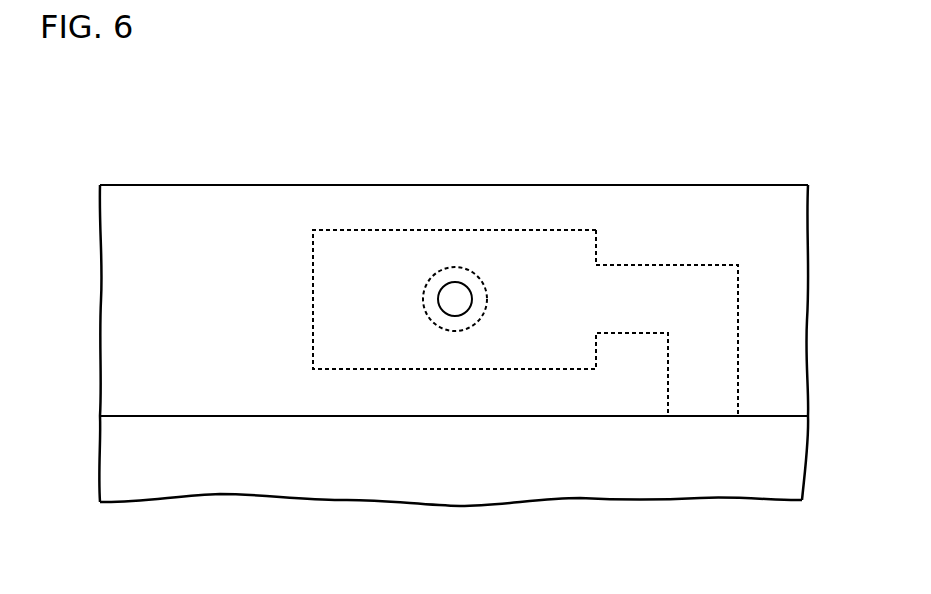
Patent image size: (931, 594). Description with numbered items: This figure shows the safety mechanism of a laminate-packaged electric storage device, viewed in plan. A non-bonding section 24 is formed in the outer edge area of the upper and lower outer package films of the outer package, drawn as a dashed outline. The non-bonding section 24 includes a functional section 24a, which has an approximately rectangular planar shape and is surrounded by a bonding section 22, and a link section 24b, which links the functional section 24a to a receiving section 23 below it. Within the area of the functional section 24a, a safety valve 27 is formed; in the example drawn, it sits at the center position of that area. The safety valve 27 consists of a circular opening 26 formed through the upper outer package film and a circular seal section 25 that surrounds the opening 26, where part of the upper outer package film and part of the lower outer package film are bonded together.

The bonding section 22 is at (149, 233).
The receiving section 23 is at (368, 478).
The non-bonding section 24 is at (511, 272).
The functional section 24a is at (342, 248).
The link section 24b is at (708, 280).
The seal section 25 is at (435, 277).
The opening 26 is at (463, 296).
The safety valve 27 is at (451, 245).